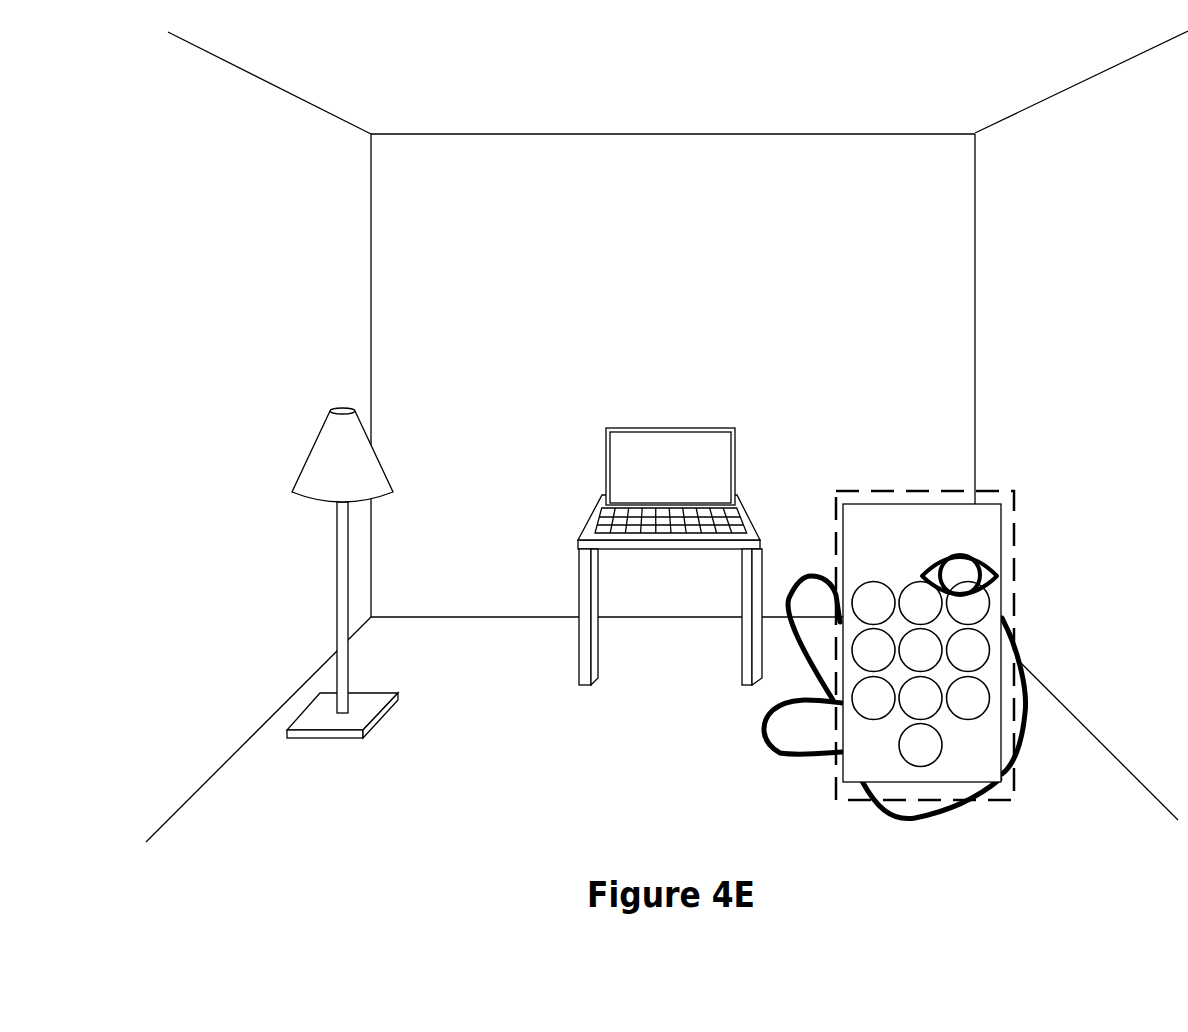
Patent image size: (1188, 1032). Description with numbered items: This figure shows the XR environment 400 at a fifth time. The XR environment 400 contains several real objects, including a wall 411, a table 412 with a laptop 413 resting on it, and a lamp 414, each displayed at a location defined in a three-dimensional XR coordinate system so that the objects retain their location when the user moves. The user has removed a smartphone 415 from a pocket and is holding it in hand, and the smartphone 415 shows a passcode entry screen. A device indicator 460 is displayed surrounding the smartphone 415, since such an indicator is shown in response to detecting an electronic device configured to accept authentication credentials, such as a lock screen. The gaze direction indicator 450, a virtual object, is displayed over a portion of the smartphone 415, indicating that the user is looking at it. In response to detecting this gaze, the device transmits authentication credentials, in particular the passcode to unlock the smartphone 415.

The XR environment 400 is at (397, 52).
The wall 411 is at (463, 190).
The table 412 is at (764, 581).
The laptop 413 is at (717, 427).
The lamp 414 is at (387, 472).
The smartphone 415 is at (1000, 548).
The gaze direction indicator 450 is at (998, 567).
The device indicator 460 is at (910, 490).